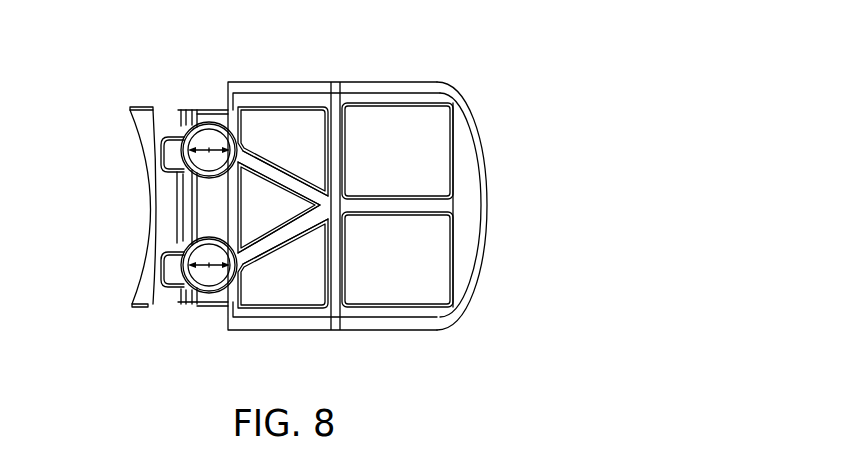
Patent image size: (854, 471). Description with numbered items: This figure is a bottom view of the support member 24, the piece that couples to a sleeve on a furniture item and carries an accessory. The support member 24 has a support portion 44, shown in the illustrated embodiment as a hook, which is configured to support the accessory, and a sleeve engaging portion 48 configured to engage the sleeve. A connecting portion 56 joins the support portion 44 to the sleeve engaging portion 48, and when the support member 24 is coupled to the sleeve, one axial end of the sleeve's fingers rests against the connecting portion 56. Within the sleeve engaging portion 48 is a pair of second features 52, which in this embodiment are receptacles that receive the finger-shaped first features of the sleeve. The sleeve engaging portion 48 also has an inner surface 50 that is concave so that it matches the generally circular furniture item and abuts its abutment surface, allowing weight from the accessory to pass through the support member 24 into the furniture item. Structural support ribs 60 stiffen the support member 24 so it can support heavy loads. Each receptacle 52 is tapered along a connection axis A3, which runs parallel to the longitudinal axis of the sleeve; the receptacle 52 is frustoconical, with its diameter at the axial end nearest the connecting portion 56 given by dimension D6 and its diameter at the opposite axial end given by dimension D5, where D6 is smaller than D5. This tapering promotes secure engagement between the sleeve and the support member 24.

The support member 24 is at (476, 58).
The support portion 44 is at (463, 136).
The sleeve engaging portion 48 is at (187, 204).
The inner surface 50 is at (150, 176).
The second features 52 is at (231, 129).
The connecting portion 56 is at (211, 133).
The structural support ribs 60 is at (268, 250).
The connection axis A3 is at (207, 140).
The dimension D5 is at (185, 265).
The dimension D6 is at (187, 150).